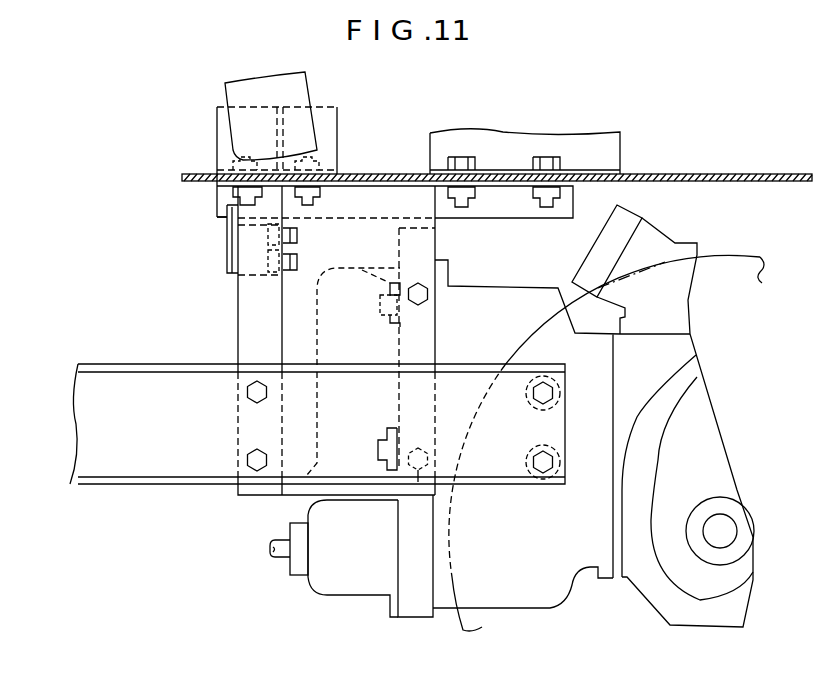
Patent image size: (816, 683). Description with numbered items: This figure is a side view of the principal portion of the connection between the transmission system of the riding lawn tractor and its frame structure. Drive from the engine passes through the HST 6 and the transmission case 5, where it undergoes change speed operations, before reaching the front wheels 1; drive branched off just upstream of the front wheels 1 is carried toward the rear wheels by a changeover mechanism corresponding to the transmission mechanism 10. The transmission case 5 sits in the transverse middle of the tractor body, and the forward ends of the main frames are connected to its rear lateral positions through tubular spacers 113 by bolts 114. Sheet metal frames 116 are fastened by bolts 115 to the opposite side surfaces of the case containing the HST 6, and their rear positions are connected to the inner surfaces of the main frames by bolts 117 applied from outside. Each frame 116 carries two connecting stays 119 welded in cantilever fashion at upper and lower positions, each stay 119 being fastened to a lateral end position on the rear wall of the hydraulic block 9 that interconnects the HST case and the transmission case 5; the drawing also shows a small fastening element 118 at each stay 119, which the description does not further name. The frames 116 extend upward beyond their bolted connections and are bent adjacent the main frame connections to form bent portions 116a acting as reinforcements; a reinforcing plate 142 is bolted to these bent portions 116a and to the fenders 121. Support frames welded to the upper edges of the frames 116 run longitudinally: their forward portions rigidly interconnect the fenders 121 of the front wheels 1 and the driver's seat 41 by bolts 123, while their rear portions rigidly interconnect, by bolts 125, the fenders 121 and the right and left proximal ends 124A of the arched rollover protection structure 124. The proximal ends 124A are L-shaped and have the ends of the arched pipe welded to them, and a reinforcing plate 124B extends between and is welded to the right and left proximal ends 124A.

The front wheels 1 is at (724, 258).
The transmission case 5 is at (579, 556).
The HST 6 is at (307, 475).
The hydraulic block 9 is at (413, 596).
The transmission mechanism 10 is at (317, 585).
The driver's seat 41 is at (633, 141).
The tubular spacers 113 is at (558, 450).
The bolts 114 is at (540, 452).
The bolts 115 is at (415, 282).
The frames 116 is at (403, 186).
The bent portions 116a is at (281, 292).
The bolts 117 is at (248, 458).
The nut 118 is at (380, 318).
The connecting stays 119 is at (360, 268).
The fenders 121 is at (735, 172).
The bolts 123 is at (545, 157).
The rollover protection structure 124 is at (233, 87).
The proximal ends 124A is at (223, 140).
The reinforcing plate 124B is at (285, 140).
The bolts 125 is at (318, 153).
The reinforcing plate 142 is at (228, 255).